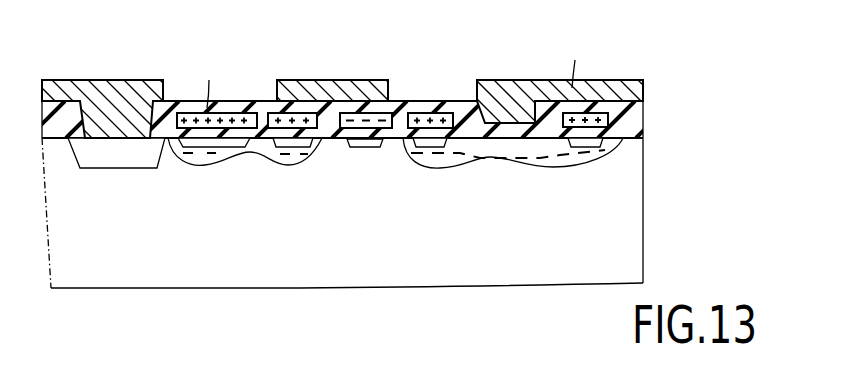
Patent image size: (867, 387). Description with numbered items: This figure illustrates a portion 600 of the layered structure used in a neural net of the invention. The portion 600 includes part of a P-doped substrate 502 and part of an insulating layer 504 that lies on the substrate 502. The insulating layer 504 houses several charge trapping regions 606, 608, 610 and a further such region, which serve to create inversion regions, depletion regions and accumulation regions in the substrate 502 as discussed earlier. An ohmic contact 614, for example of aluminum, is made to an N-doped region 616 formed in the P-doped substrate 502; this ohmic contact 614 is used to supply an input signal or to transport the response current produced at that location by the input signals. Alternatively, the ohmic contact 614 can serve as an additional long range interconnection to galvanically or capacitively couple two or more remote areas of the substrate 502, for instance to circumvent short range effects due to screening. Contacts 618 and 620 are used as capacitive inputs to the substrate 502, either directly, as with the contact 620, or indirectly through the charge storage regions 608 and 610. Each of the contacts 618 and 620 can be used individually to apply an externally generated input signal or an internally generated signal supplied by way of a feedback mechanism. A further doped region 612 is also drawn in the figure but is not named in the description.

The portion 600 is at (189, 362).
The substrate 502 is at (627, 215).
The insulating layer 504 is at (635, 123).
The charge trapping region 606 is at (242, 122).
The charge trapping region 608 is at (321, 147).
The charge trapping region 610 is at (378, 128).
The N+ region 612 is at (433, 118).
The ohmic contact 614 is at (93, 92).
The N-doped region 616 is at (142, 160).
The contact 618 is at (323, 92).
The contact 620 is at (623, 76).